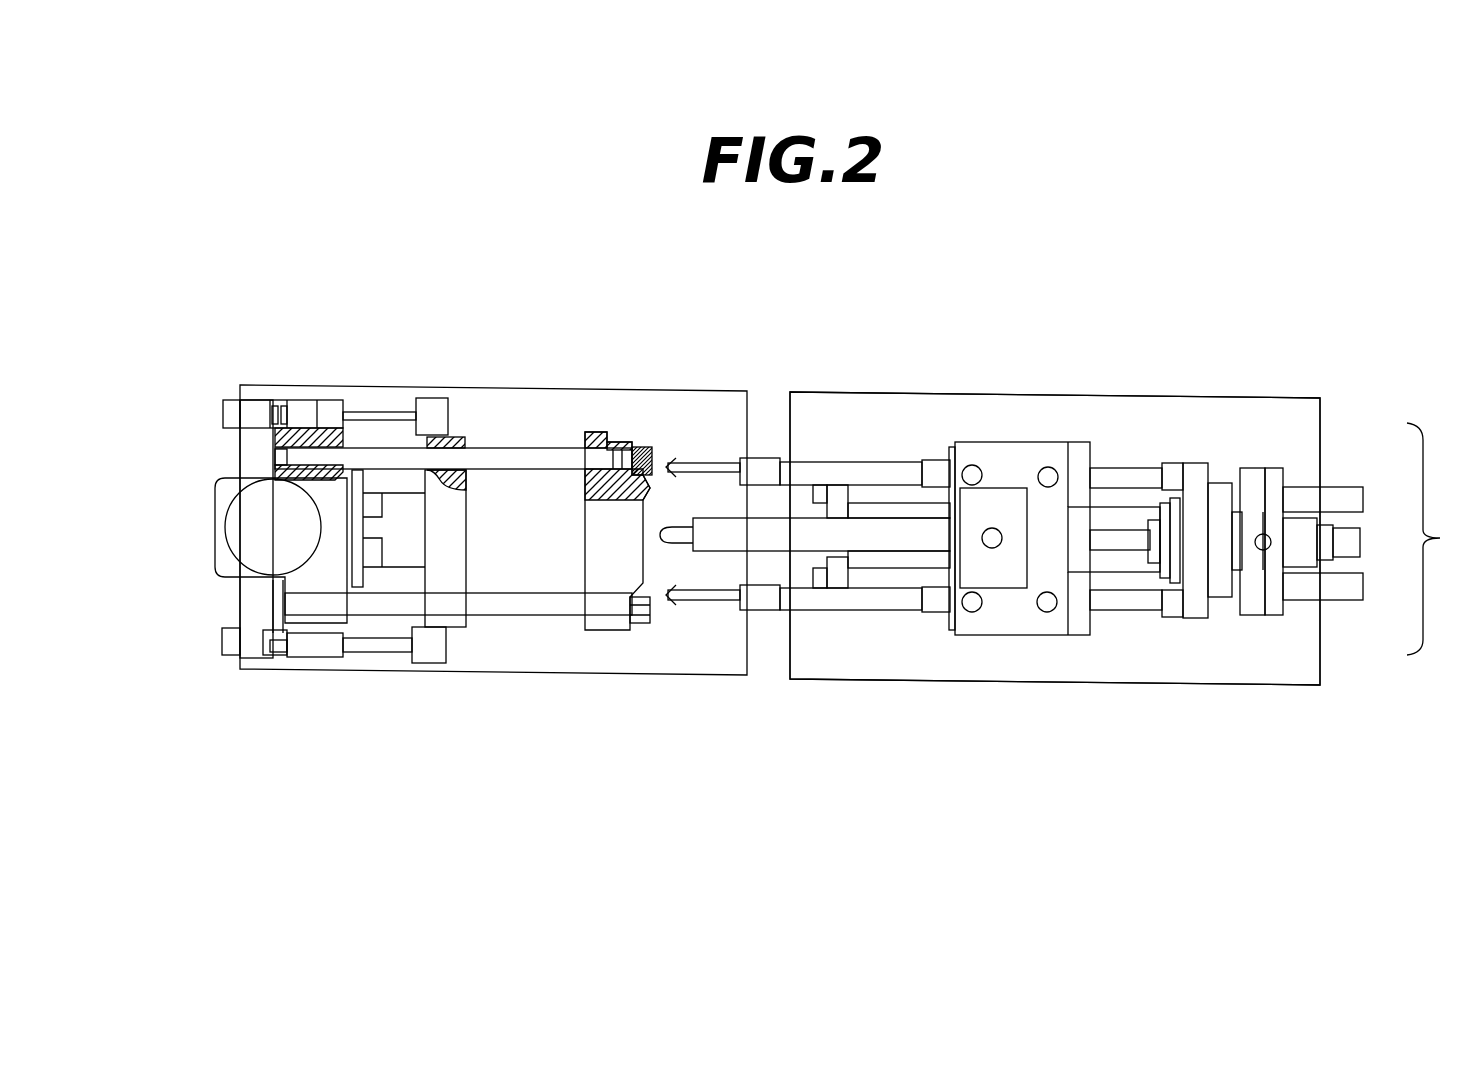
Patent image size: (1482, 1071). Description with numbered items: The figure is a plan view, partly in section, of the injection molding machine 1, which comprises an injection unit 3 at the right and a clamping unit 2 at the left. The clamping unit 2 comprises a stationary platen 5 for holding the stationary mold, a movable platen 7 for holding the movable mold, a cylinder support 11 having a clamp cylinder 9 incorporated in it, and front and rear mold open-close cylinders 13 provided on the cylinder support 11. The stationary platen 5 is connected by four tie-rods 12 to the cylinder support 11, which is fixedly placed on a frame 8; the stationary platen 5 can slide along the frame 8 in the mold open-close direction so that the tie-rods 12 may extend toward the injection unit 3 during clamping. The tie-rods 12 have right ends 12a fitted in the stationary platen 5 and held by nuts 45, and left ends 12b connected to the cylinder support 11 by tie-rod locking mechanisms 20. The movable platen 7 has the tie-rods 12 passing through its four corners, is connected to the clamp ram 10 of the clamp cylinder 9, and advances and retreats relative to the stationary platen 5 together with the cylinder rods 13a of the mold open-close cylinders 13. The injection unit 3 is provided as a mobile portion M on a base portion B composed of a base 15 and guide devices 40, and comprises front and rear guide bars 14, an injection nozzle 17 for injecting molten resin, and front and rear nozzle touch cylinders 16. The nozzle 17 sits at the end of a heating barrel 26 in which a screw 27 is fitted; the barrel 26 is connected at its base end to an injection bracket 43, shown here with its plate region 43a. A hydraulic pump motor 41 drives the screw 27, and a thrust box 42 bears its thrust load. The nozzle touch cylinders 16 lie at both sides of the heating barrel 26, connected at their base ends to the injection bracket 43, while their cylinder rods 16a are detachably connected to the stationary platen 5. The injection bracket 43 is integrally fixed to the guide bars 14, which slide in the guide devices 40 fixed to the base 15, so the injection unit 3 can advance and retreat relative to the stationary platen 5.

The injection molding machine 1 is at (1165, 297).
The clamping unit 2 is at (452, 298).
The injection unit 3 is at (1072, 348).
The stationary platen 5 is at (607, 533).
The movable platen 7 is at (435, 567).
The frame 8 is at (678, 432).
The clamp cylinder 9 is at (367, 590).
The clamp ram 10 is at (329, 631).
The cylinder support 11 is at (307, 602).
The tie-rods 12 is at (522, 448).
The right ends of tie-rods 12a is at (603, 442).
The left ends of tie-rods 12b is at (273, 452).
The mold open-close cylinders 13 is at (248, 400).
The cylinder rods 13a is at (400, 412).
The guide bars 14 is at (920, 495).
The base 15 is at (1142, 660).
The nozzle touch cylinders 16 is at (836, 465).
The cylinder rods of nozzle touch cylinders 16a is at (720, 467).
The injection nozzle 17 is at (668, 518).
The tie-rod locking mechanisms 20 is at (300, 406).
The heating barrel 26 is at (768, 537).
The screw 27 is at (1115, 535).
The guide devices 40 is at (842, 490).
The hydraulic pump motor 41 is at (1298, 533).
The thrust box 42 is at (1200, 500).
The injection bracket 43 is at (1030, 450).
The housing plate 43a is at (988, 525).
The nuts 45 is at (640, 447).
The base portion B is at (1320, 625).
The mobile portion M is at (1444, 539).